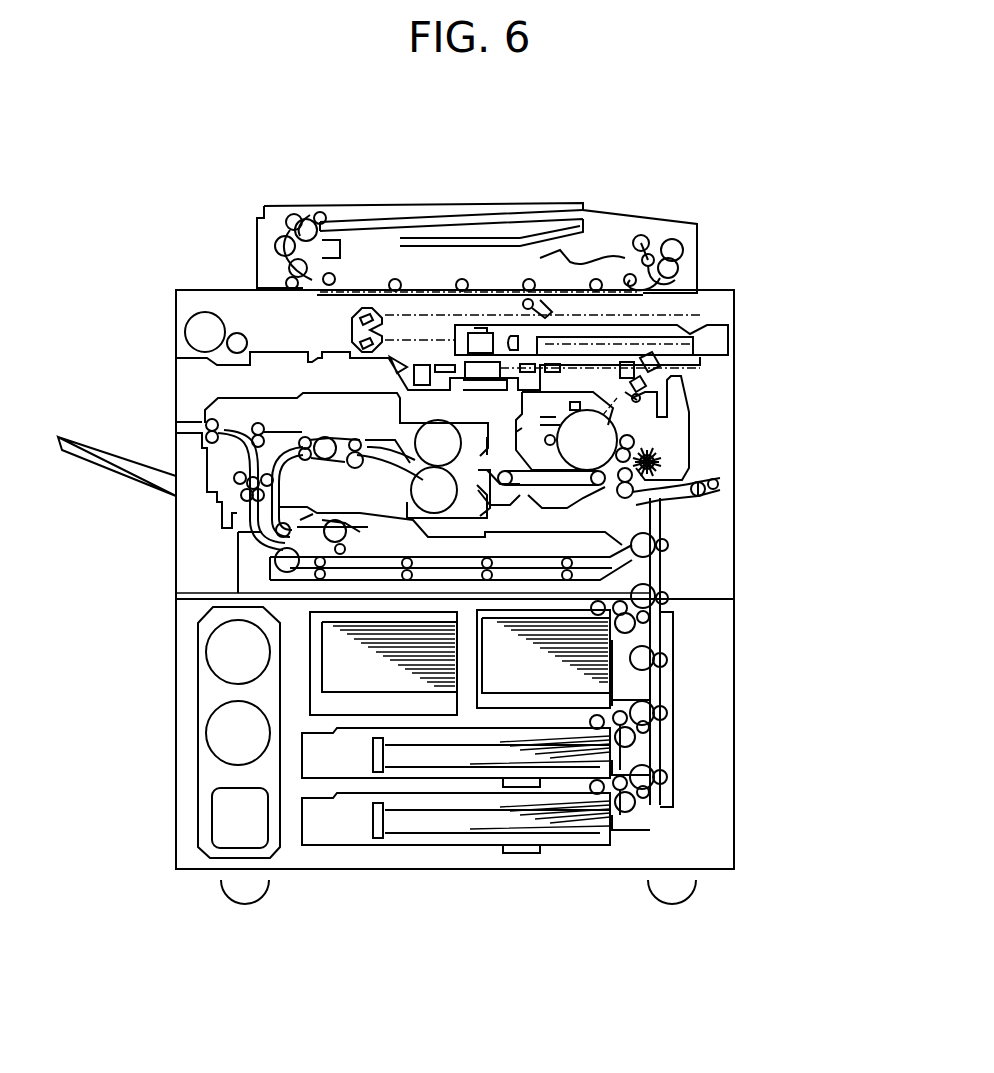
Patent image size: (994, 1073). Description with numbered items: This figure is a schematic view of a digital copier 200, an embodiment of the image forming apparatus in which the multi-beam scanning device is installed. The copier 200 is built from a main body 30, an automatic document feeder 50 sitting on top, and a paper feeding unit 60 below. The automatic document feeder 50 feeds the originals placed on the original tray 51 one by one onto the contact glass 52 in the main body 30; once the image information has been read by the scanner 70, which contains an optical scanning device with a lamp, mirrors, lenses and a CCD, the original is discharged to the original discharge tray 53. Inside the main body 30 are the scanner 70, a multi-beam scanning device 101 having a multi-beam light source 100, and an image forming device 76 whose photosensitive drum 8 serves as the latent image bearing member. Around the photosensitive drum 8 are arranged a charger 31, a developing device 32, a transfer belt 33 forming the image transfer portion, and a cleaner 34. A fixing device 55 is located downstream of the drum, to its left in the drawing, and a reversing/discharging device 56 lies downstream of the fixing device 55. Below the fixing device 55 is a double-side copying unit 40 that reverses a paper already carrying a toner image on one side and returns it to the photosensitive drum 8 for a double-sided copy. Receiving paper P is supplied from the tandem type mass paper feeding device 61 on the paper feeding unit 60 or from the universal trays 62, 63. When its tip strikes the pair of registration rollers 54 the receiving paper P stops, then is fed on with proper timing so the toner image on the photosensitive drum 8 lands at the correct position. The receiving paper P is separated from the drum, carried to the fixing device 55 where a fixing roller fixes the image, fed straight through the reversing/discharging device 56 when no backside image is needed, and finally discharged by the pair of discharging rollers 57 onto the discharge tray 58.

The digital copier 200 is at (713, 175).
The automatic document feeder 50 is at (477, 234).
The original tray 51 is at (440, 223).
The contact glass 52 is at (567, 297).
The original discharge tray 53 is at (577, 250).
The scanner 70 is at (426, 342).
The multi-beam light source 100 is at (404, 371).
The multi-beam scanning device 101 is at (648, 367).
The main body 30 is at (788, 357).
The image forming device 76 is at (430, 585).
The developing device 32 is at (704, 414).
The charger 31 is at (563, 397).
The cleaner 34 is at (523, 428).
The transfer belt 33 is at (607, 488).
The photosensitive drum 8 is at (547, 493).
The pair of registration rollers 54 is at (647, 498).
The fixing device 55 is at (406, 481).
The pair of discharging rollers 57 is at (198, 410).
The discharge tray 58 is at (119, 461).
The reversing/discharging device 56 is at (221, 505).
The double-side copying unit 40 is at (254, 568).
The paper feeding unit 60 is at (501, 747).
The tandem type mass paper feeding device 61 is at (617, 645).
The universal tray 62 is at (608, 765).
The universal tray 63 is at (610, 838).
The receiving paper P is at (337, 675).